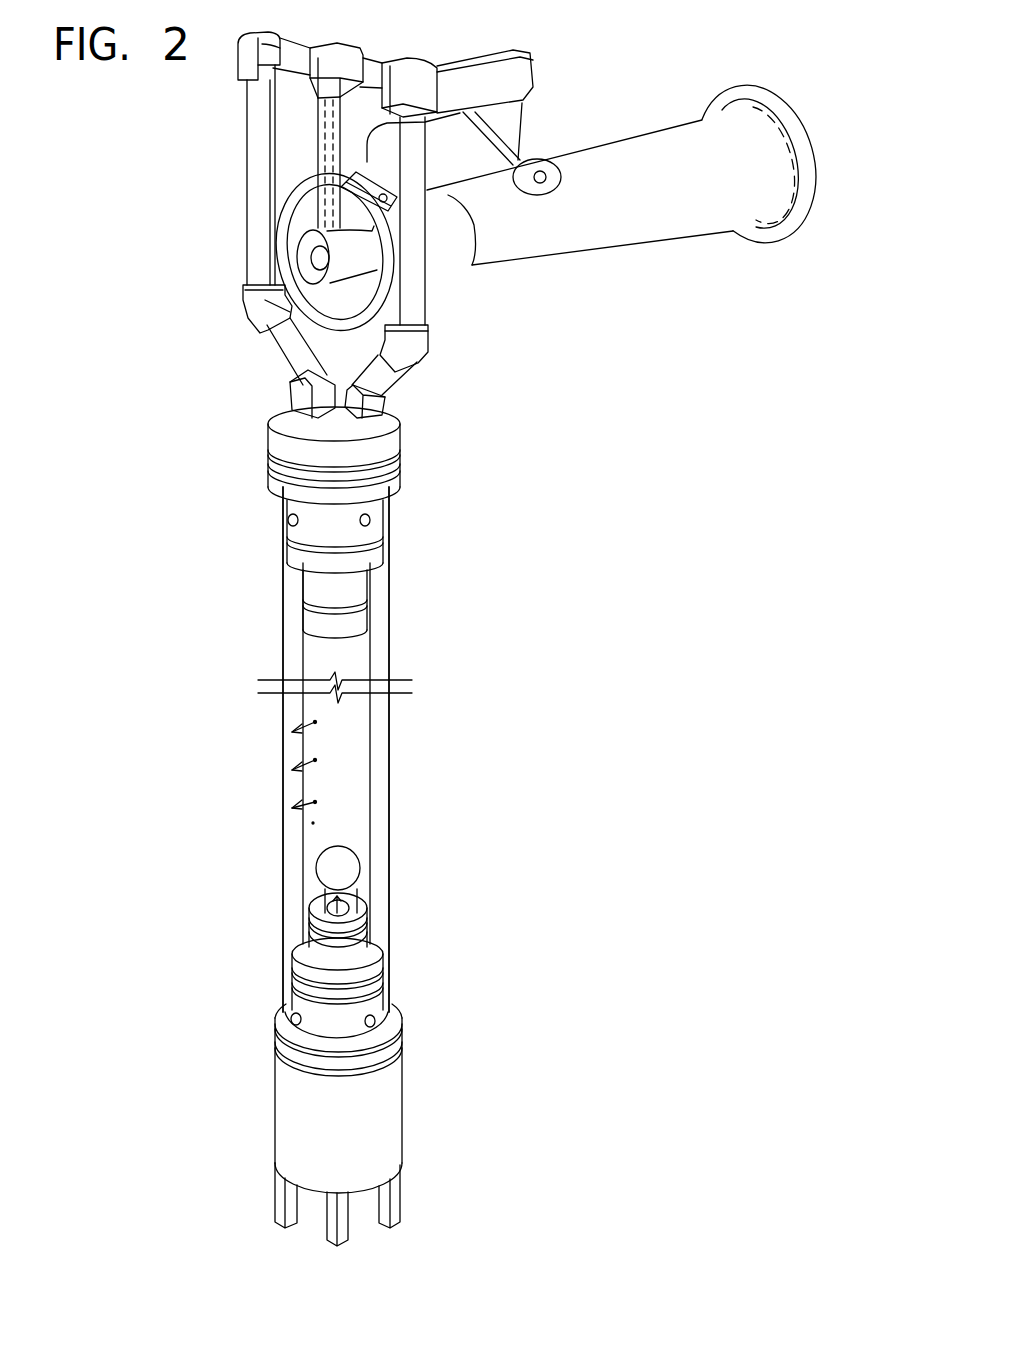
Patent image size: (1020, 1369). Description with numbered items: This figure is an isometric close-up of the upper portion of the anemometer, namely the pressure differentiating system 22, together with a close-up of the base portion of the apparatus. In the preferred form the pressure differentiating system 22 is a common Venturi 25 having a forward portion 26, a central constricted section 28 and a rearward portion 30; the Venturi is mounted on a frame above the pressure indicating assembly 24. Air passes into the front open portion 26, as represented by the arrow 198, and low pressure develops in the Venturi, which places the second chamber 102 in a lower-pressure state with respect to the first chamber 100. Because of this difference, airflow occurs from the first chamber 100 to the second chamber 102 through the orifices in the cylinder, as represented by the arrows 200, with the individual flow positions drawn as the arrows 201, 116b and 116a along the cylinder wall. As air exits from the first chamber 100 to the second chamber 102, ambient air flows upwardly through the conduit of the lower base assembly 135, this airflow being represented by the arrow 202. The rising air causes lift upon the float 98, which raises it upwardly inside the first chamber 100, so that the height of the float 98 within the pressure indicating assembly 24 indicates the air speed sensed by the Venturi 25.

The pressure differentiating system 22 is at (672, 78).
The arrow 198 is at (205, 282).
The Venturi 25 is at (645, 230).
The rearward portion 30 is at (800, 215).
The central constricted section 28 is at (463, 267).
The forward portion 26 is at (387, 278).
The pressure indicating assembly 24 is at (447, 935).
The second chamber 102 is at (385, 598).
The first chamber 100 is at (350, 745).
The direction arrow 201 is at (300, 712).
The second position 116b is at (313, 762).
The arrows 200 is at (315, 800).
The first position 116a is at (317, 803).
The float 98 is at (350, 870).
The arrow 202 is at (350, 910).
The lower base assembly 135 is at (420, 1067).